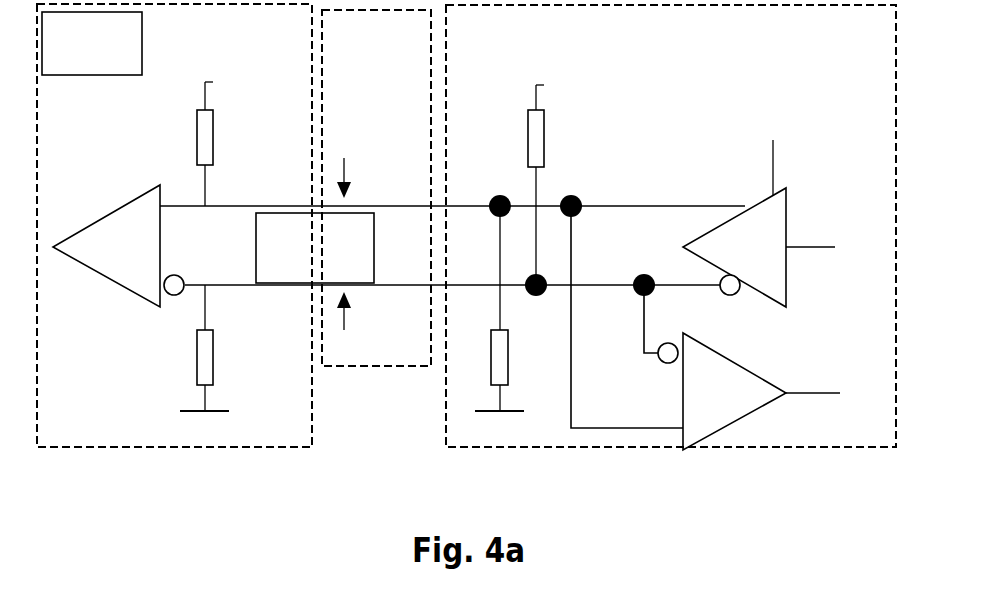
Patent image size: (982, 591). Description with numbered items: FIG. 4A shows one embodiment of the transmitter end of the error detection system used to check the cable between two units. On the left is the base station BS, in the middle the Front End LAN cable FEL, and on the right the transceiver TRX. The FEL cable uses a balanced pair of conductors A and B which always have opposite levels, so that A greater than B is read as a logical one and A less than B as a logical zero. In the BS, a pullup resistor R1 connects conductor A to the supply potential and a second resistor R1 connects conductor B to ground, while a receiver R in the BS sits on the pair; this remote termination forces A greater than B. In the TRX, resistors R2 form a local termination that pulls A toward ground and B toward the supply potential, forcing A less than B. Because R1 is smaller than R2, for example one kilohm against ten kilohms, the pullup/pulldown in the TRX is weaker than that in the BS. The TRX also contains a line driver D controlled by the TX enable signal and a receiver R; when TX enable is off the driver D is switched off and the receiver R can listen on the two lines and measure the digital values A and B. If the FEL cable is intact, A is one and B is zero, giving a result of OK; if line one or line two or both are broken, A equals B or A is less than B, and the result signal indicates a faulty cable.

The base station BS is at (174, 225).
The Front End LAN cable FEL is at (343, 188).
The transceiver TRX is at (671, 226).
The conductor A is at (452, 182).
The conductor B is at (452, 310).
The receiver R is at (456, 317).
The driver D is at (764, 205).
The base station termination resistor R1 is at (224, 241).
The transceiver termination resistor R2 is at (537, 242).